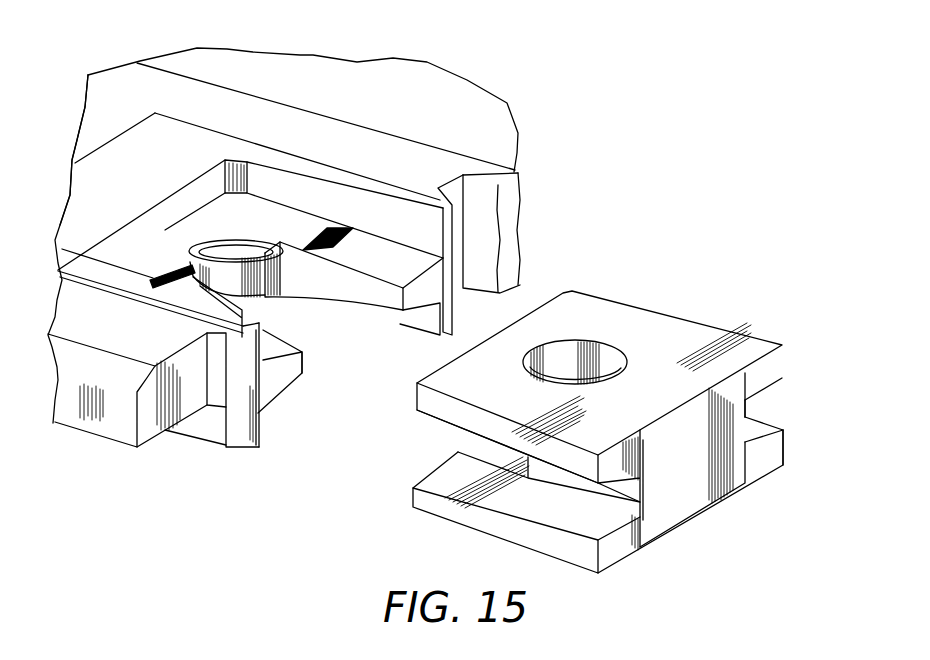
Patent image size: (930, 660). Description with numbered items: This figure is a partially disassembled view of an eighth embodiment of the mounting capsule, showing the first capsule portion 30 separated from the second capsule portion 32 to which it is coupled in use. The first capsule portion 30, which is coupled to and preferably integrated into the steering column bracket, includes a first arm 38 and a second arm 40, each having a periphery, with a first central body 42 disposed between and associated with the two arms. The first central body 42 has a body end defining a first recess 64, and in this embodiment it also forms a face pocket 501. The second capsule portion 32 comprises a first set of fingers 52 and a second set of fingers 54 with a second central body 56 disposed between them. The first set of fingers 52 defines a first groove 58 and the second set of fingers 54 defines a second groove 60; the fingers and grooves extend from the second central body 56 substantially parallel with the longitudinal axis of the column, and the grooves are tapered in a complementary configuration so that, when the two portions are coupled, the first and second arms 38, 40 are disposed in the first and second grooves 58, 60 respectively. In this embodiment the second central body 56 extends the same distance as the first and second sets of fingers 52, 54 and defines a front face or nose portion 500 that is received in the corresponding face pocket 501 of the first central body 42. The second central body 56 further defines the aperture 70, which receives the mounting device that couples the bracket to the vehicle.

The first capsule portion 30 is at (283, 286).
The second capsule portion 32 is at (605, 388).
The first arm 38 is at (358, 272).
The second arm 40 is at (287, 358).
The first central body 42 is at (265, 230).
The first set of fingers 52 is at (417, 398).
The second set of fingers 54 is at (783, 450).
The second central body 56 is at (599, 362).
The first groove 58 is at (570, 501).
The second groove 60 is at (755, 408).
The first recess 64 is at (223, 250).
The aperture 70 is at (604, 349).
The nose portion 500 is at (458, 452).
The face pocket 501 is at (100, 254).